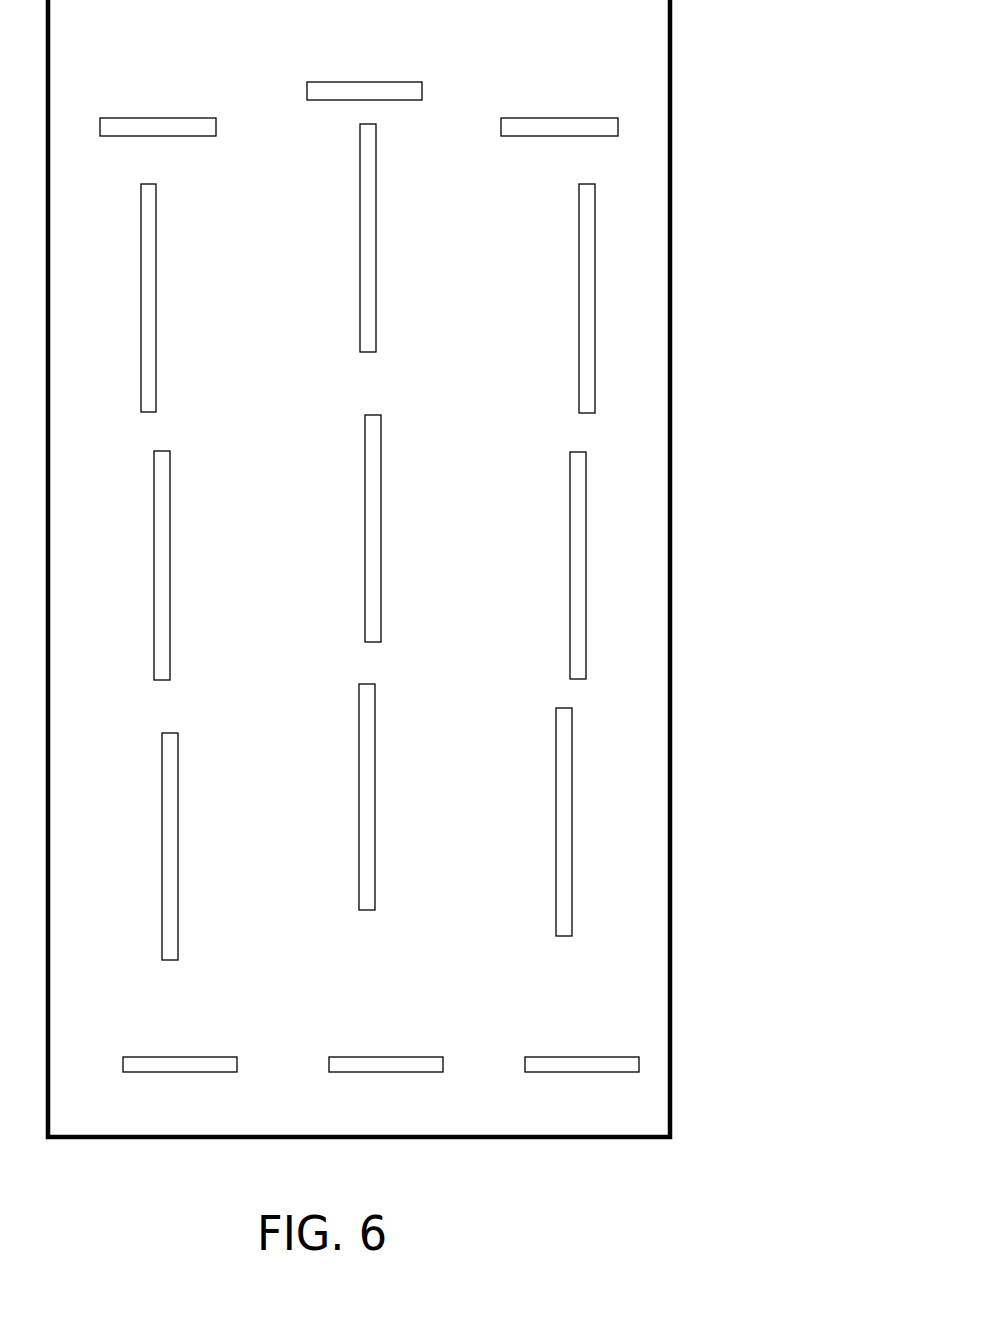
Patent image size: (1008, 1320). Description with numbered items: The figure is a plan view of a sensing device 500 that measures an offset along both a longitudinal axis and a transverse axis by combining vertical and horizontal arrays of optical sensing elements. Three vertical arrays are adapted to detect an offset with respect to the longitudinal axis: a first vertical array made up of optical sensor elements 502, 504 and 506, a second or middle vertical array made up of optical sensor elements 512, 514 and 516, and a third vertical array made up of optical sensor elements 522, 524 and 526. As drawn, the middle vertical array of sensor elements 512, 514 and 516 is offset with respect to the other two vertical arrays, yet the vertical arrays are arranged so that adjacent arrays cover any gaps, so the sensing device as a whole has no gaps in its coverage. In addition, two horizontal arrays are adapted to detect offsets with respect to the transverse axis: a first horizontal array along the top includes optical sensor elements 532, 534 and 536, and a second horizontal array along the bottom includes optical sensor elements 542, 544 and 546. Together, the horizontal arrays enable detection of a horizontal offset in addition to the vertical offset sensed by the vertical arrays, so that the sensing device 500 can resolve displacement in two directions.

The sensing device 500 is at (777, 229).
The optical sensor element 502 is at (142, 298).
The optical sensor element 504 is at (176, 565).
The optical sensor element 506 is at (175, 932).
The optical sensor element 512 is at (353, 238).
The optical sensor element 514 is at (388, 530).
The optical sensor element 516 is at (353, 798).
The optical sensor element 522 is at (573, 297).
The optical sensor element 524 is at (578, 663).
The optical sensor element 526 is at (557, 896).
The optical sensor element 532 is at (158, 113).
The optical sensor element 534 is at (303, 100).
The optical sensor element 536 is at (497, 127).
The optical sensor element 542 is at (122, 1067).
The optical sensor element 544 is at (327, 1067).
The optical sensor element 546 is at (520, 1065).